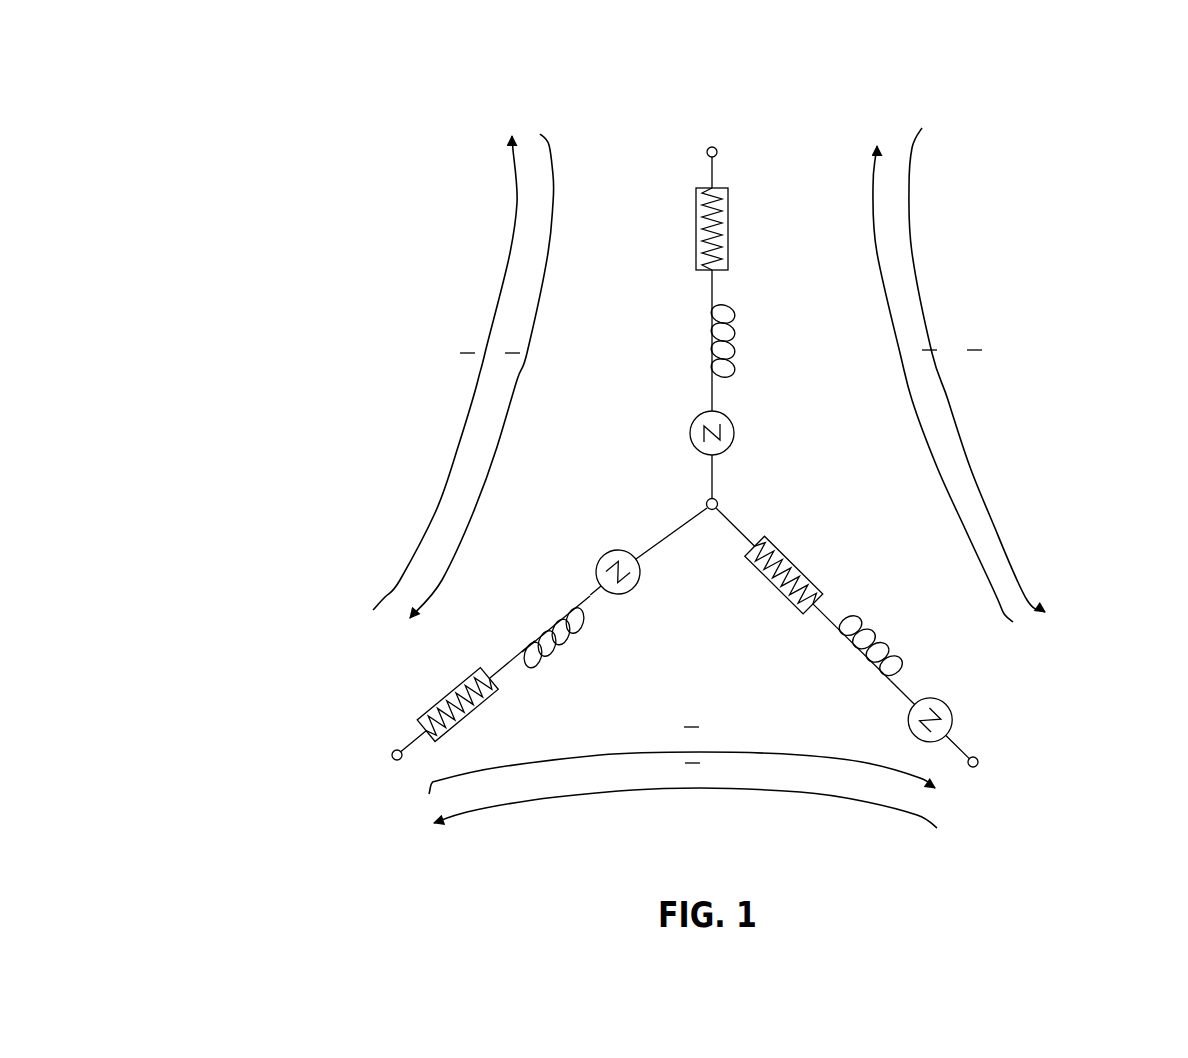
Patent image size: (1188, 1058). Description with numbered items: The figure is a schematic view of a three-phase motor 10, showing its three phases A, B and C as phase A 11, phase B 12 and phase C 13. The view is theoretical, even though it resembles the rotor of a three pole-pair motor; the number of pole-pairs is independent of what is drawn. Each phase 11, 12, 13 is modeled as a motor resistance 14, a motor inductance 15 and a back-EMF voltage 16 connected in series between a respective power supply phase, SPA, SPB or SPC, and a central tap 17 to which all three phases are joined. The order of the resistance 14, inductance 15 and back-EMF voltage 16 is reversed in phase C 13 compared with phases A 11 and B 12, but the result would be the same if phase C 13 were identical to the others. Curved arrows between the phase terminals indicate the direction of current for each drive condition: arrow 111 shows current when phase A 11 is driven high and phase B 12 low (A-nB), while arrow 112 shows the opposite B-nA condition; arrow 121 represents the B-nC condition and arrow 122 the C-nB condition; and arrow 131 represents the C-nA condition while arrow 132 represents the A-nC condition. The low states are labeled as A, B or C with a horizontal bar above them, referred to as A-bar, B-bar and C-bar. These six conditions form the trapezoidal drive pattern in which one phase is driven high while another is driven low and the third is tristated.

The three-phase motor 10 is at (620, 66).
The phase A 11 is at (720, 94).
The phase B 12 is at (289, 760).
The phase C 13 is at (1091, 765).
The motor resistance 14 is at (731, 227).
The motor inductance 15 is at (740, 330).
The back-EMF voltage 16 is at (733, 418).
The central tap 17 is at (706, 502).
The arrow 111 is at (556, 180).
The arrow 112 is at (410, 560).
The arrow 121 is at (428, 786).
The arrow 122 is at (792, 796).
The arrow 131 is at (872, 180).
The arrow 132 is at (1016, 566).